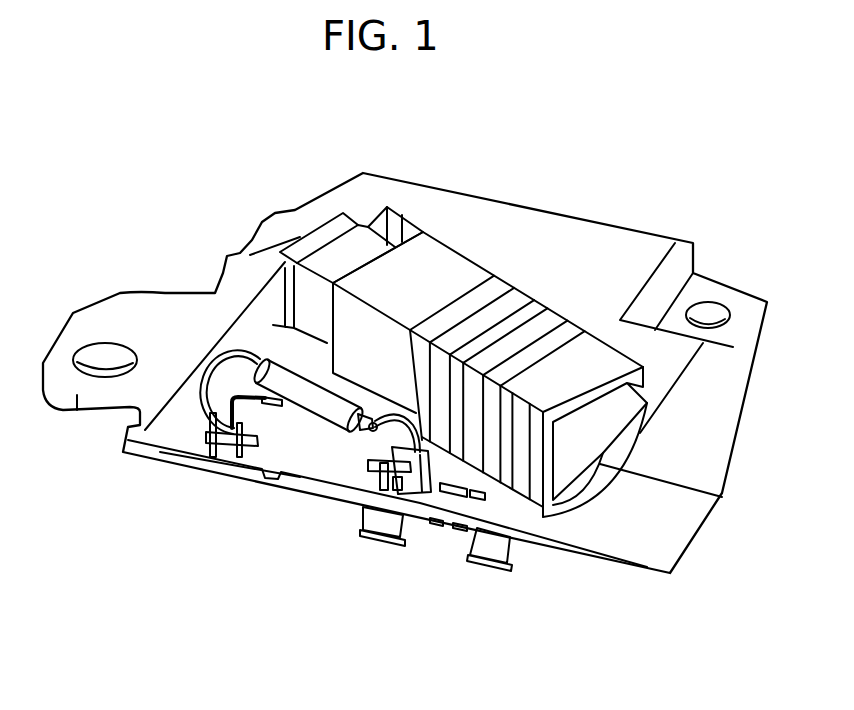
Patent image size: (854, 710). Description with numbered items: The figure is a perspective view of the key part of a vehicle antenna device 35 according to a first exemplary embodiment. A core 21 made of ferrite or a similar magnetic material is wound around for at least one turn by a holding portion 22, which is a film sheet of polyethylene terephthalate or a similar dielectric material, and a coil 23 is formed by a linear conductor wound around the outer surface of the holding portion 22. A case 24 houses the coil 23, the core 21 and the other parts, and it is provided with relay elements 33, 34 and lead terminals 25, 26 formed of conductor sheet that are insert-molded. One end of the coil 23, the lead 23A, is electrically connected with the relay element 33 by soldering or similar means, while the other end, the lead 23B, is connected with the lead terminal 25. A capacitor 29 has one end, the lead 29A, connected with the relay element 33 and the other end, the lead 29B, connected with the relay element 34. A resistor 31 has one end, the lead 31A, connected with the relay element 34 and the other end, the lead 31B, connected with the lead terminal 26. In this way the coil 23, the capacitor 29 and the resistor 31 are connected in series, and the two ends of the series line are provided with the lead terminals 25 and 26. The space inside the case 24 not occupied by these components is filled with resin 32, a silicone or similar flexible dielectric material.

The core 21 is at (337, 248).
The holding portion 22 is at (437, 253).
The coil 23 is at (470, 293).
The lead 23A is at (290, 270).
The lead 23B is at (510, 450).
The case 24 is at (588, 245).
The lead terminal 25 is at (495, 555).
The lead terminal 26 is at (388, 528).
The capacitor 29 is at (300, 467).
The lead 29A is at (377, 463).
The lead 29B is at (200, 454).
The resistor 31 is at (300, 395).
The lead 31A is at (250, 344).
The lead 31B is at (370, 432).
The resin 32 is at (247, 297).
The relay element 33 is at (443, 498).
The relay element 34 is at (223, 447).
The vehicle antenna device 35 is at (720, 183).